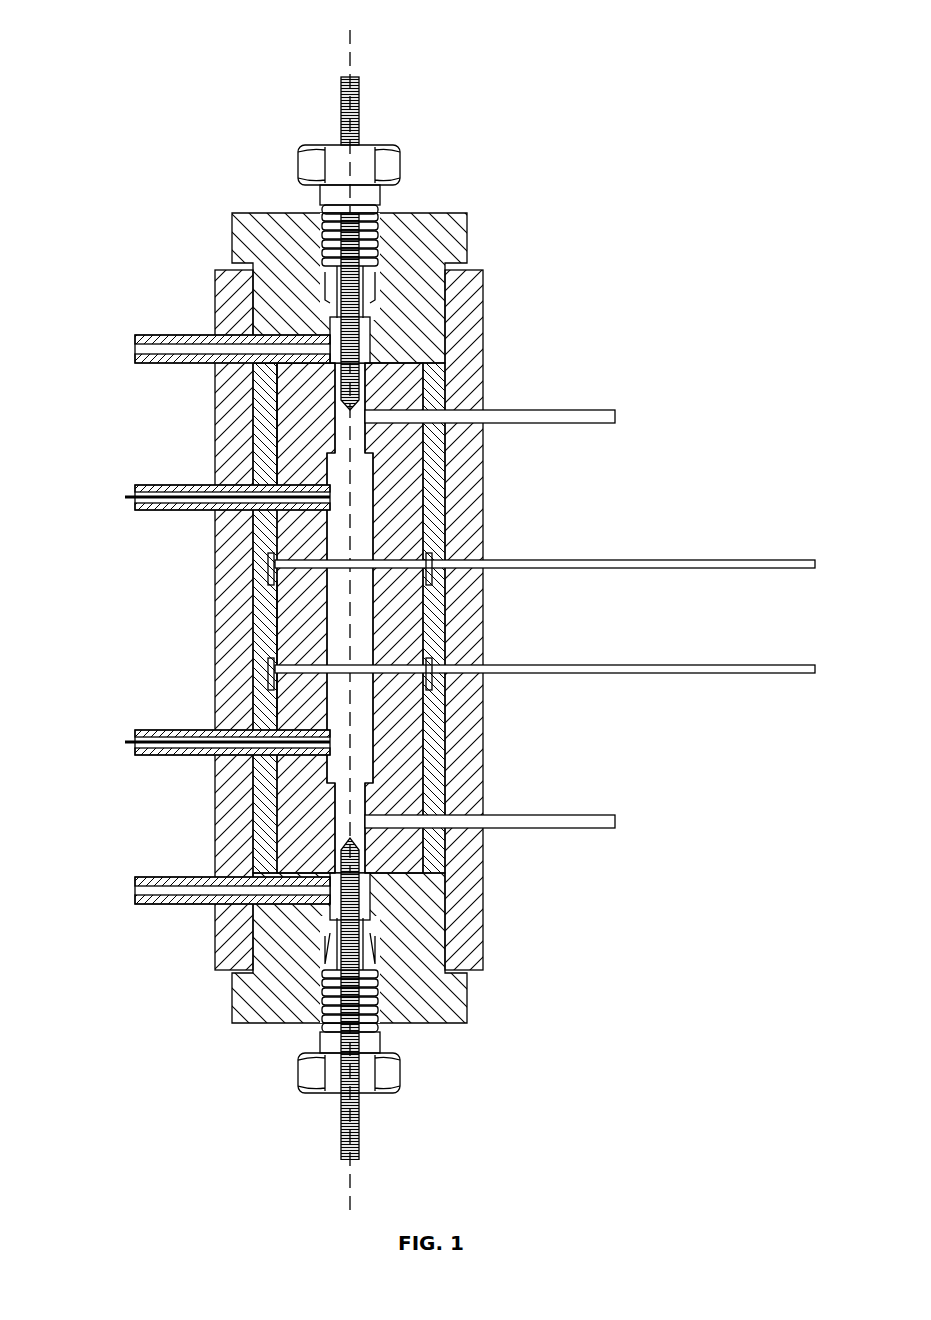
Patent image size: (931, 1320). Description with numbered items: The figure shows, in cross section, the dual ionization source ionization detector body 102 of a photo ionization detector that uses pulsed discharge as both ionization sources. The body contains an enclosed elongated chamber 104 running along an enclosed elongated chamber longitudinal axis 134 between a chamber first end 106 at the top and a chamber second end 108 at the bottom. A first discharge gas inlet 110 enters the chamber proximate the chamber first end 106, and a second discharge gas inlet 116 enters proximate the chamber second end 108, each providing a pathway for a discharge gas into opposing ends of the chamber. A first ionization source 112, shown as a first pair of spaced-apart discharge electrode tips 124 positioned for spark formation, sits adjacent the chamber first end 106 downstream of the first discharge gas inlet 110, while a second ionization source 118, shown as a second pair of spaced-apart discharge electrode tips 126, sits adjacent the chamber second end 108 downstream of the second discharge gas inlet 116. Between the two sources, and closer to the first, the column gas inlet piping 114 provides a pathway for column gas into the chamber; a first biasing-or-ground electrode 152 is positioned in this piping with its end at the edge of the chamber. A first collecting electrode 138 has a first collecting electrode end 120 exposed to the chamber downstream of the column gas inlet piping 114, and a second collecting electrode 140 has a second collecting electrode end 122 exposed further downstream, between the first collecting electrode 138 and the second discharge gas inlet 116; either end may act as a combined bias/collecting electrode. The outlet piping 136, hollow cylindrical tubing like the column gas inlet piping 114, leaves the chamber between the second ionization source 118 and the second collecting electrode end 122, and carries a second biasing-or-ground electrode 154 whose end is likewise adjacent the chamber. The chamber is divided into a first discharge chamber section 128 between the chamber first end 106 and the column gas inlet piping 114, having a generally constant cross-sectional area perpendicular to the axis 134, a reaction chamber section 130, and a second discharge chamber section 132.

The dual ionization source ionization detector body 102 is at (210, 43).
The enclosed elongated chamber 104 is at (330, 522).
The chamber first end 106 is at (362, 334).
The chamber second end 108 is at (365, 880).
The first discharge gas inlet 110 is at (167, 335).
The first ionization source 112 is at (580, 410).
The column gas inlet piping 114 is at (167, 485).
The second discharge gas inlet 116 is at (167, 877).
The second ionization source 118 is at (580, 815).
The first collecting electrode end 120 is at (373, 558).
The second collecting electrode end 122 is at (373, 663).
The first pair of spaced-apart discharge electrode tips 124 is at (348, 425).
The second pair of spaced-apart discharge electrode tips 126 is at (350, 822).
The first discharge chamber section 128 is at (268, 445).
The reaction chamber section 130 is at (330, 600).
The second discharge chamber section 132 is at (373, 783).
The enclosed elongated chamber longitudinal axis 134 is at (348, 52).
The outlet piping 136 is at (167, 730).
The first collecting electrode 138 is at (705, 560).
The second collecting electrode 140 is at (705, 665).
The first biasing-or-ground electrode 152 is at (127, 497).
The second biasing-or-ground electrode 154 is at (128, 742).